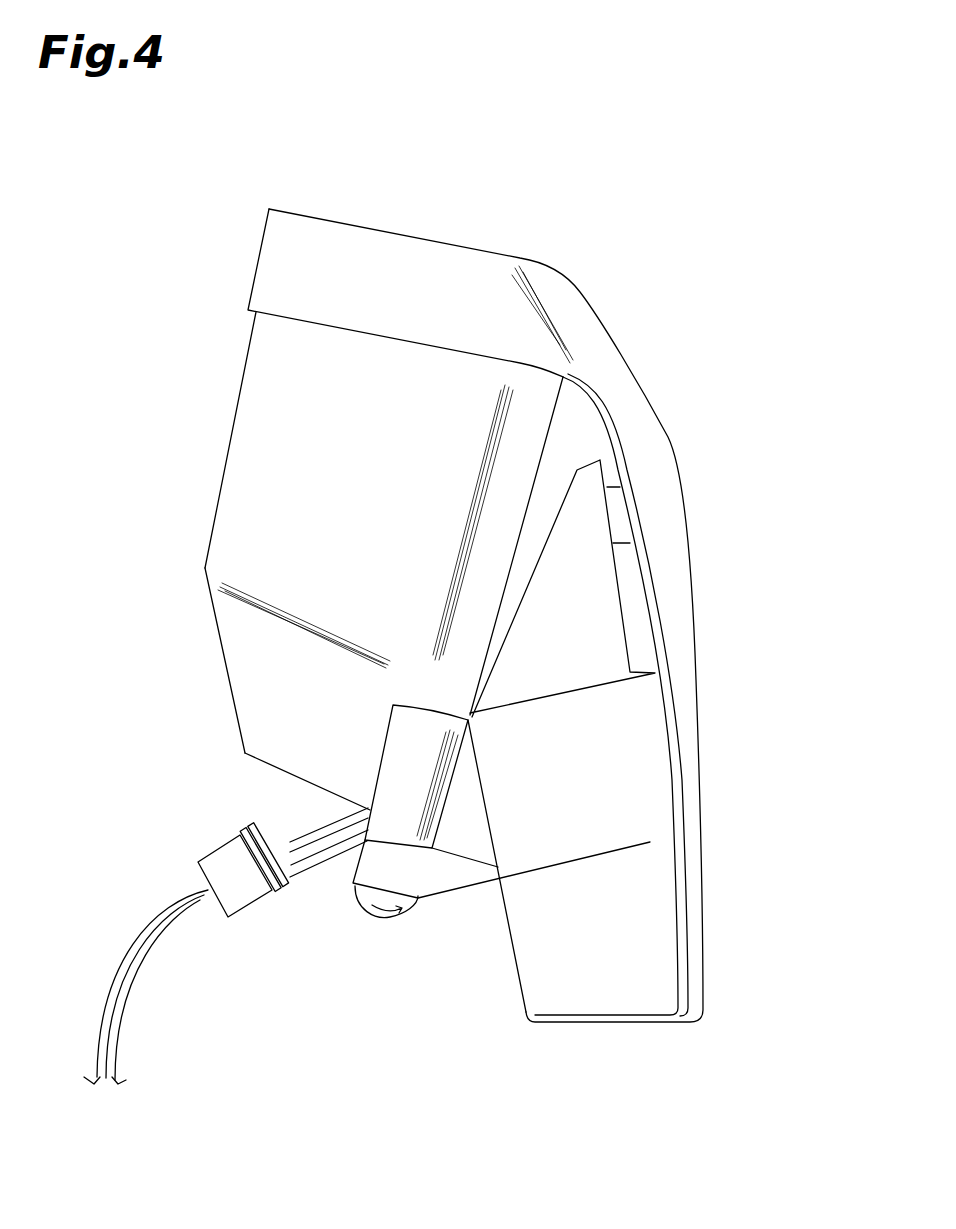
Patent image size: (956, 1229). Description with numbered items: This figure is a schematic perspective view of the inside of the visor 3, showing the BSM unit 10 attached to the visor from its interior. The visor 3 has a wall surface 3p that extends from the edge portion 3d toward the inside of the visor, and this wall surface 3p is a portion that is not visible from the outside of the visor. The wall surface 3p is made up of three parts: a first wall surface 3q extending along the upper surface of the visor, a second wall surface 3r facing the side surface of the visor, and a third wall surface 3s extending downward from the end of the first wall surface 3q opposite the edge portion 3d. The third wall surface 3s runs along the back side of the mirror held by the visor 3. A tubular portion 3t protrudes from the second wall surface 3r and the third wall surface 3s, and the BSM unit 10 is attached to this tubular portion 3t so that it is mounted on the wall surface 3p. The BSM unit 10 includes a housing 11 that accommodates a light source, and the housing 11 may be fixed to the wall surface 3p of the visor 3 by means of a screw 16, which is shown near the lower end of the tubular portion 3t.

The visor 3 is at (579, 251).
The edge portion 3d is at (475, 285).
The second wall surface 3r is at (523, 465).
The first wall surface 3q is at (250, 470).
The wall surface 3p is at (272, 718).
The third wall surface 3s is at (335, 760).
The tubular portion 3t is at (398, 801).
The screw 16 is at (360, 890).
The BSM unit 10 is at (457, 886).
The housing 11 is at (567, 792).